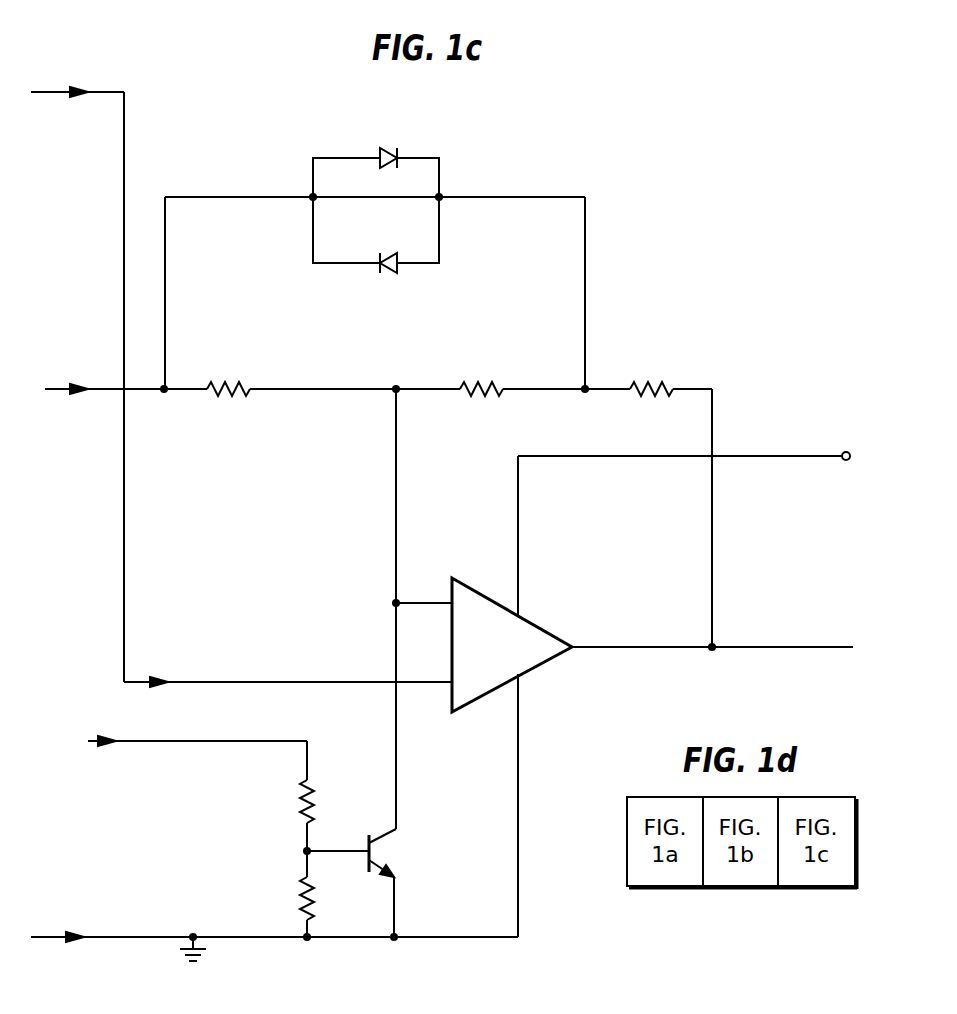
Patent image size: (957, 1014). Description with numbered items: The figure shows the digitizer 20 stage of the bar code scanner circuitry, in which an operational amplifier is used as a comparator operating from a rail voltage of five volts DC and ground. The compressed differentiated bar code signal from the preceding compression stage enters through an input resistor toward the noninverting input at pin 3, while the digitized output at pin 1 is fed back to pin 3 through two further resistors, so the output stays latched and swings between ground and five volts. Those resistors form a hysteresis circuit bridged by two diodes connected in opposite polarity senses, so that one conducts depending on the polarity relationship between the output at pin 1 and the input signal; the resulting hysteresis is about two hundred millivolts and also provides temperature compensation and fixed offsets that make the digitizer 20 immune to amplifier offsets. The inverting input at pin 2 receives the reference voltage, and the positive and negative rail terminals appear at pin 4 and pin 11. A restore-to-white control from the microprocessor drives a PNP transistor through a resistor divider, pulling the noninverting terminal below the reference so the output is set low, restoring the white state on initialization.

The digitizer 20 is at (537, 161).
The output pin of U2A 1 is at (712, 634).
The comparator inverting input pin 2 is at (426, 670).
The noninverting input pin of U2A 3 is at (422, 591).
The comparator positive supply pin 4 is at (508, 536).
The V- rail terminal pin of U2A 11 is at (502, 805).